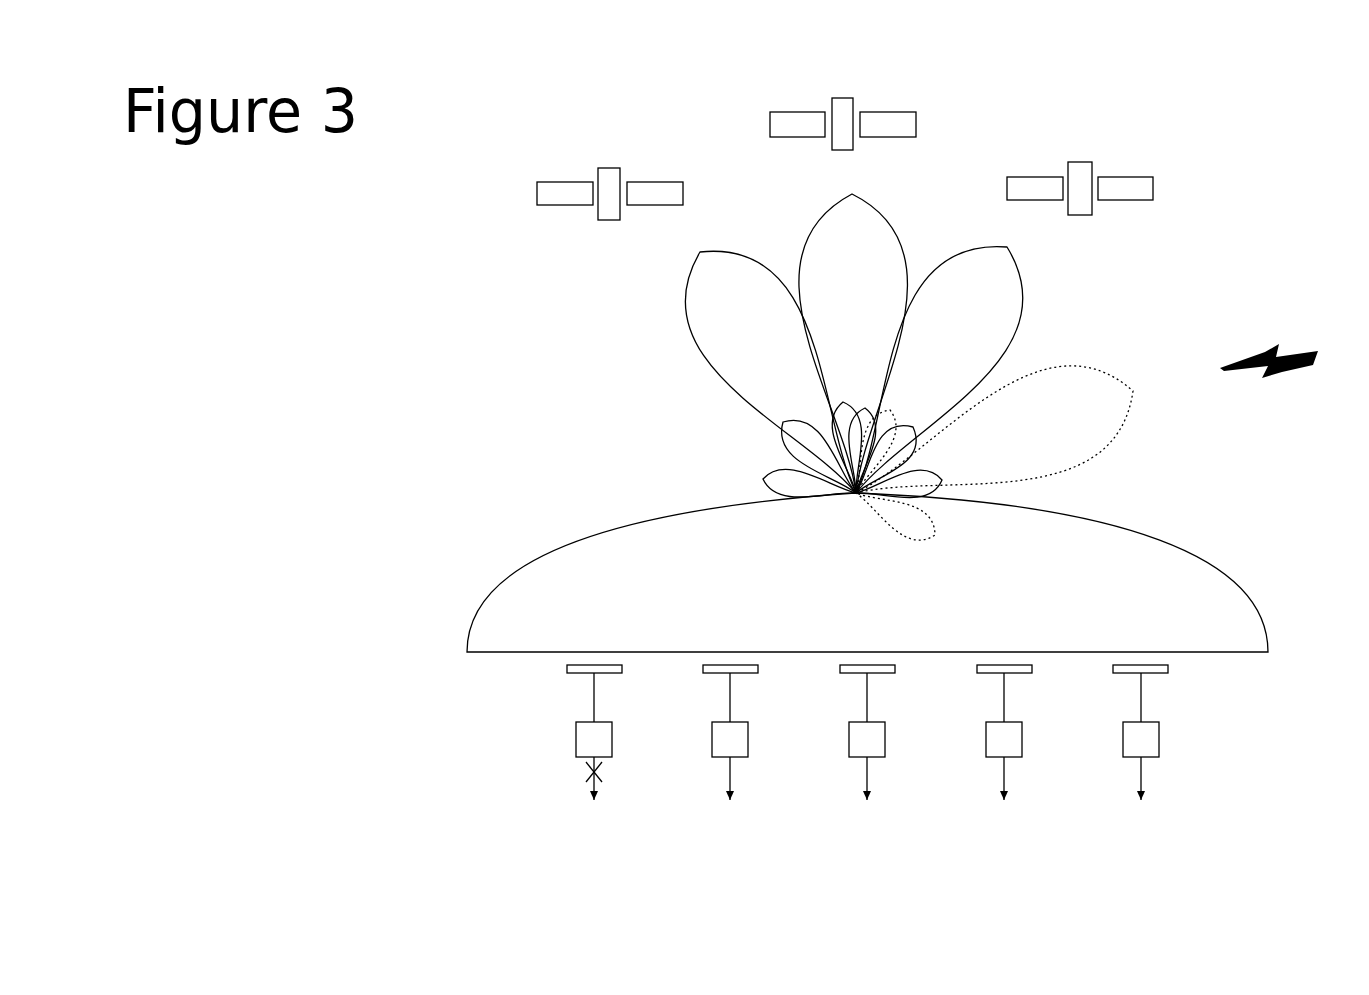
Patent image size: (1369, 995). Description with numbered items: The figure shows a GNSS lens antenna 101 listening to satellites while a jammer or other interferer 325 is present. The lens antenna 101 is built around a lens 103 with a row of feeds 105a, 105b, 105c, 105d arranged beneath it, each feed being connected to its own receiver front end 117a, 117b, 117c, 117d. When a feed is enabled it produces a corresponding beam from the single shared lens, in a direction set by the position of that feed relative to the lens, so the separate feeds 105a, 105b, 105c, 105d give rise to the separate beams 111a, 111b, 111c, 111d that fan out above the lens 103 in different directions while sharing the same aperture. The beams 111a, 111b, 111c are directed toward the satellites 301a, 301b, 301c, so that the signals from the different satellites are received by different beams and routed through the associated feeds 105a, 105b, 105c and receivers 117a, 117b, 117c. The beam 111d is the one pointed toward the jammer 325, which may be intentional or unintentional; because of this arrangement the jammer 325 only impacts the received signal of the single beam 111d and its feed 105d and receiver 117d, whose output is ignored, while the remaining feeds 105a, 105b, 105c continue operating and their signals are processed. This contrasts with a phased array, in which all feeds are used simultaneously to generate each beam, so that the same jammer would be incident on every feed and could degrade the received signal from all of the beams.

The lens antenna 101 is at (847, 610).
The lens 103 is at (706, 496).
The feed 105a is at (982, 679).
The feed 105b is at (848, 679).
The feed 105c is at (711, 679).
The feed 105d is at (568, 679).
The beam 111a is at (705, 250).
The beam 111b is at (905, 228).
The beam 111c is at (1058, 283).
The beam 111d is at (1104, 358).
The receiver front end 117a is at (982, 753).
The receiver front end 117b is at (845, 753).
The receiver front end 117c is at (707, 753).
The receiver front end 117d is at (570, 753).
The satellite 301a is at (656, 166).
The satellite 301b is at (860, 105).
The satellite 301c is at (1127, 152).
The jammer or interferer 325 is at (1289, 346).